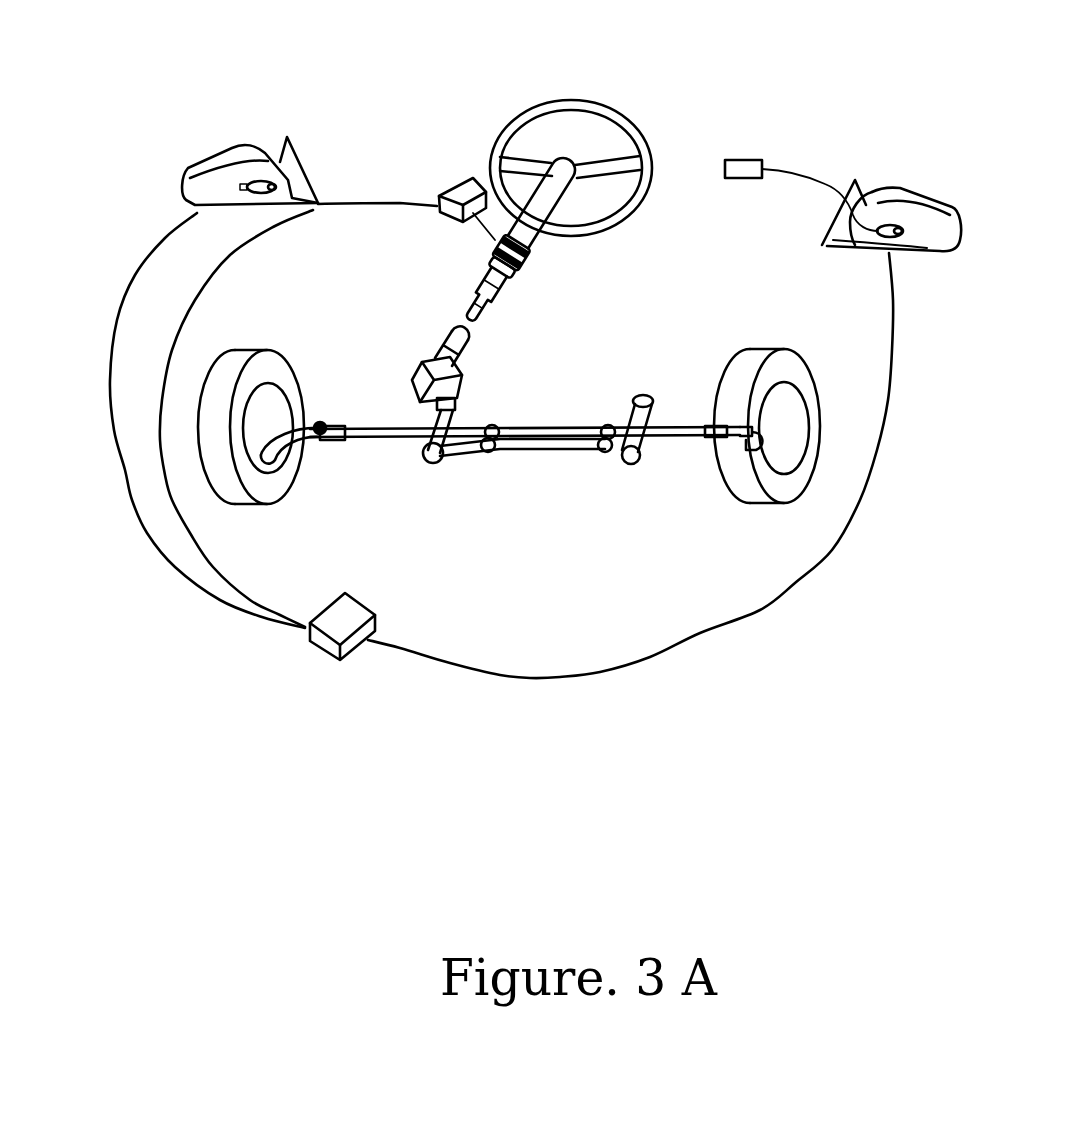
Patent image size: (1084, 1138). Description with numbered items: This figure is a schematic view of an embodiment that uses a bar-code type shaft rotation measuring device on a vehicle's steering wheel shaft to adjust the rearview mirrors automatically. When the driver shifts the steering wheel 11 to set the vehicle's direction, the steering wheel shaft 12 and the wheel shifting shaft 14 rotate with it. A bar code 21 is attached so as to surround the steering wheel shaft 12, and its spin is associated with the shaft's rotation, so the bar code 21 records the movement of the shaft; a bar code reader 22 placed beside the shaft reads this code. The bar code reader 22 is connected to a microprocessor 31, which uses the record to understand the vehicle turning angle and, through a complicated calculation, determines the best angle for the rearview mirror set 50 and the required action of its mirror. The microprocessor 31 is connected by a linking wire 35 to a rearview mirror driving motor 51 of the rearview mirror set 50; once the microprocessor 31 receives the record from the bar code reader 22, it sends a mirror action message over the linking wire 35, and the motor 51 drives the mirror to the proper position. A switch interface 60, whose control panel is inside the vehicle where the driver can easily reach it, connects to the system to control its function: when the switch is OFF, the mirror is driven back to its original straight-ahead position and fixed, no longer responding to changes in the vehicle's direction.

The steering wheel 11 is at (633, 130).
The steering wheel shaft 12 is at (540, 207).
The wheel shifting shaft 14 is at (385, 432).
The bar code 21 is at (523, 270).
The bar code reader 22 is at (460, 185).
The microprocessor 31 is at (355, 608).
The linking wire 35 is at (780, 578).
The rearview mirror set 50 is at (887, 193).
The rearview mirror driving motor 51 is at (897, 208).
The switch interface 60 is at (744, 160).